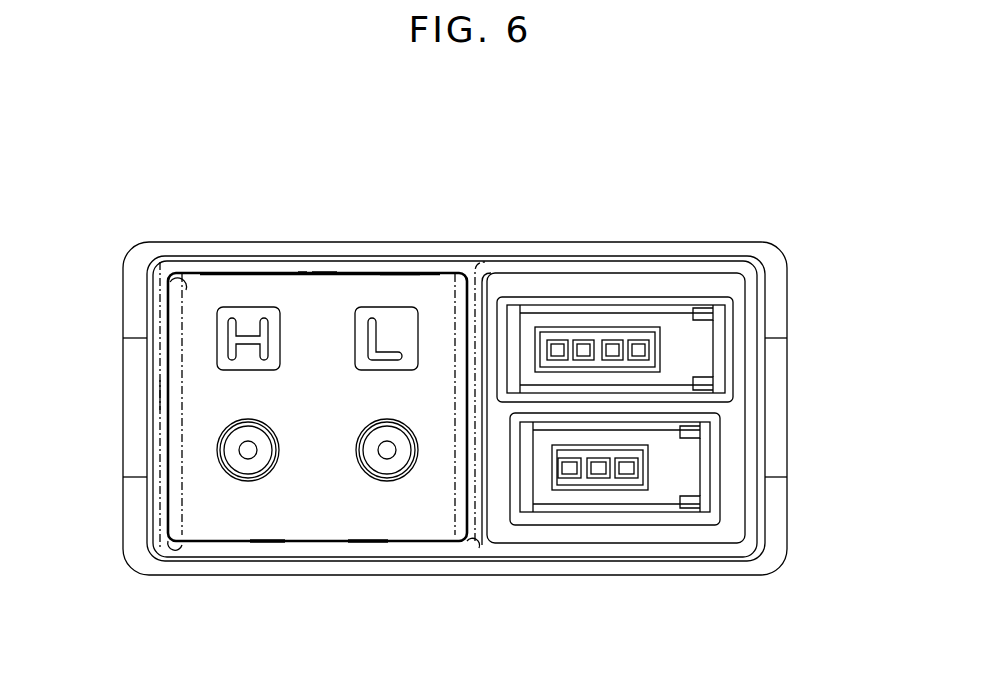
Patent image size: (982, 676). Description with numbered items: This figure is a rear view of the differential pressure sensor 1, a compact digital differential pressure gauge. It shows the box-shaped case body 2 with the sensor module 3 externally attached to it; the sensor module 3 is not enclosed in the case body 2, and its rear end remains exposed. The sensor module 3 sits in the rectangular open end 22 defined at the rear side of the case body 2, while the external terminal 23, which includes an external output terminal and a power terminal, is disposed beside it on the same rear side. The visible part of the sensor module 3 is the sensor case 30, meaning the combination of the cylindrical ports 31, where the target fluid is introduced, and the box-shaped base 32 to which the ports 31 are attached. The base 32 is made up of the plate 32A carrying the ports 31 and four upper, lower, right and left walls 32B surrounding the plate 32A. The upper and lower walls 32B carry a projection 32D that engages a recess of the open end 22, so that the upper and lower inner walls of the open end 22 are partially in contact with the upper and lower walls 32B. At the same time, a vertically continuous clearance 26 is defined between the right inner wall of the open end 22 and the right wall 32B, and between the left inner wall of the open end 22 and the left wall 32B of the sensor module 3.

The differential pressure sensor 1 is at (675, 163).
The case body 2 is at (540, 242).
The sensor module 3 is at (220, 280).
The open end 22 is at (195, 283).
The external terminal 23 is at (690, 470).
The clearance 26 is at (180, 553).
The sensor case 30 is at (227, 517).
The port 31 is at (373, 448).
The base 32 is at (413, 518).
The plate 32A is at (283, 282).
The walls 32B is at (160, 393).
The projection 32D is at (320, 274).